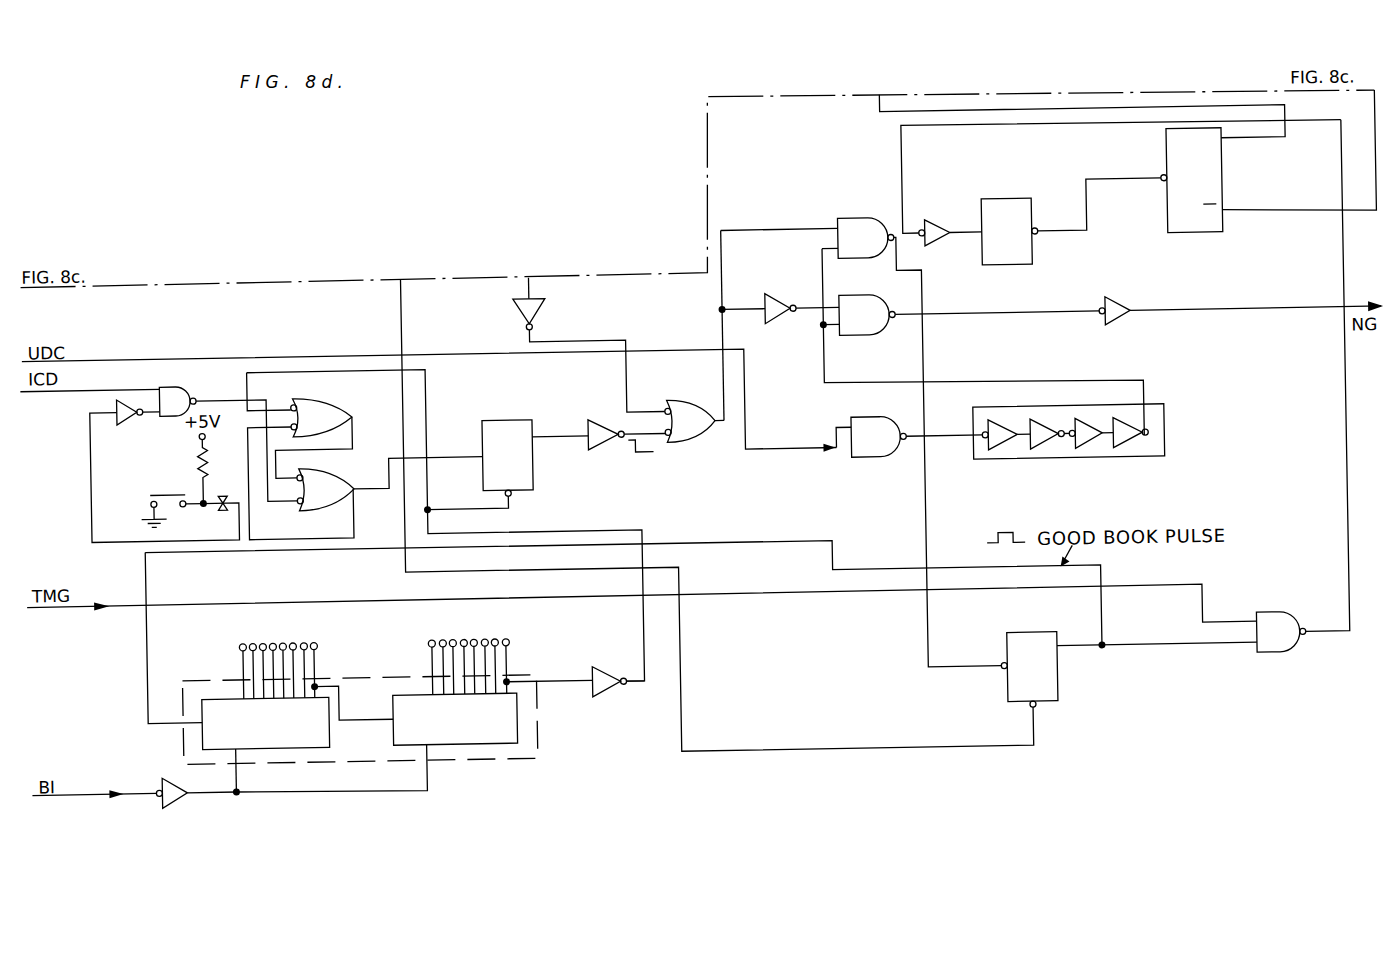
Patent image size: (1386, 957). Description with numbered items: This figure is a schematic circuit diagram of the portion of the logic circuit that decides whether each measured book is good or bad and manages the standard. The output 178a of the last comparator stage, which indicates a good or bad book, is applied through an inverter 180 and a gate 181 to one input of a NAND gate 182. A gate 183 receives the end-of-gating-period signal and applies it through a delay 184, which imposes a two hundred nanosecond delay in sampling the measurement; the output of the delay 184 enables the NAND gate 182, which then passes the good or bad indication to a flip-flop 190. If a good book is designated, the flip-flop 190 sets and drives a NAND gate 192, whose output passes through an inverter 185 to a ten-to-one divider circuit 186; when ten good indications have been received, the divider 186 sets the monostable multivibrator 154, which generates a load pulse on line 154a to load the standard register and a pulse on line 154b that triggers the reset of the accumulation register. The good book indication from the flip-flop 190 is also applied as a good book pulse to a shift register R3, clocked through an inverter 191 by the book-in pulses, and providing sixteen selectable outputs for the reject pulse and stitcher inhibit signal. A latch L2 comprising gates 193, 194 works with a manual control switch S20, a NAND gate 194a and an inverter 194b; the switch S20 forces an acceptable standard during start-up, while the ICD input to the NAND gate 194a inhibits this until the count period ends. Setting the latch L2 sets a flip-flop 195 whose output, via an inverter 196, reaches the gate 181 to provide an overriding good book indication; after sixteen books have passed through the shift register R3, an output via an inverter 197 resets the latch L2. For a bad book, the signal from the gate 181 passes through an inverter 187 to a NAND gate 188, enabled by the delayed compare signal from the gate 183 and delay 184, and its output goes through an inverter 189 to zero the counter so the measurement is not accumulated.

The monostable multivibrator 154 is at (1096, 179).
The line 154a is at (1381, 167).
The line 154b is at (884, 118).
The output of the last comparator stage 178a is at (534, 279).
The inverter 180 is at (549, 307).
The gate 181 is at (684, 443).
The NAND gate 182 is at (850, 220).
The gate 183 is at (868, 461).
The delay 184 is at (1064, 464).
The inverter 185 is at (933, 251).
The 10:1 divider circuit 186 is at (1036, 264).
The inverter 187 is at (784, 325).
The NAND gate 188 is at (857, 339).
The inverter 189 is at (1120, 333).
The flip-flop 190 is at (1054, 696).
The inverter 191 is at (166, 801).
The NAND gate 192 is at (1278, 663).
The gate 193 is at (343, 394).
The gate 194 is at (344, 464).
The NAND gate 194a is at (180, 377).
The inverter 194b is at (133, 410).
The flip-flop 195 is at (534, 476).
The inverter 196 is at (602, 418).
The inverter 197 is at (602, 667).
The manual control switch S20 is at (163, 486).
The latch L2 is at (387, 437).
The shift register R3 is at (523, 757).